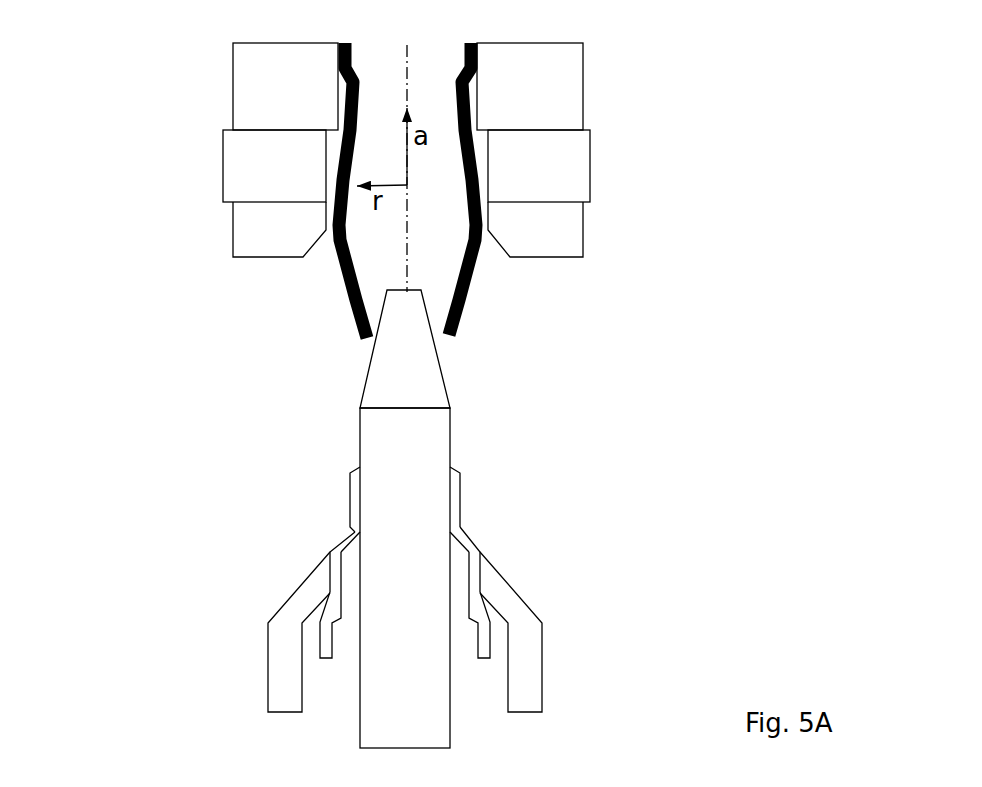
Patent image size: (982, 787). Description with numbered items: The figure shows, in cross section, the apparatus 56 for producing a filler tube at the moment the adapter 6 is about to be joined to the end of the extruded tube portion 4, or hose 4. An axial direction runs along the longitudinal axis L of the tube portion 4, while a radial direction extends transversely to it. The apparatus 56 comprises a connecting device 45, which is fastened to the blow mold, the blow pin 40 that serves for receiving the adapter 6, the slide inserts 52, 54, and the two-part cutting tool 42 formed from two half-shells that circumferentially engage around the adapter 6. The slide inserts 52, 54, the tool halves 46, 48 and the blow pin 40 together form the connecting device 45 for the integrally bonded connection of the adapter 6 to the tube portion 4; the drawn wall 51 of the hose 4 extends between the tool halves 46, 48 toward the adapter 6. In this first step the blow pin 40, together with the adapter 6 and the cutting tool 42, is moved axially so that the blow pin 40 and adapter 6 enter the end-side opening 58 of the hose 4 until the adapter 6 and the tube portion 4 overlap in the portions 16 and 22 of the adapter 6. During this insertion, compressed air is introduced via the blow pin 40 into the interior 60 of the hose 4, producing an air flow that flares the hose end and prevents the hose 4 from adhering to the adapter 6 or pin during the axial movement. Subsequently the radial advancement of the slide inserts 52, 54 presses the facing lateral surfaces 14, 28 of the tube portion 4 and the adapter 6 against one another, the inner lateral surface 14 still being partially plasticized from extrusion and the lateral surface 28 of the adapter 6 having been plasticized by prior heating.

The tube portion 4 is at (463, 303).
The adapter 6 is at (458, 505).
The inner lateral surface 14 is at (374, 318).
The portion of the adapter 16 is at (350, 508).
The portion of the adapter 22 is at (343, 535).
The lateral surface 28 is at (347, 497).
The blow pin 40 is at (437, 423).
The cutting tool 42 is at (527, 640).
The connecting device 45 is at (180, 108).
The tool half 46 is at (252, 95).
The tool half 48 is at (563, 88).
The first beam 51 is at (327, 247).
The slide insert 52 is at (253, 192).
The slide insert 54 is at (563, 192).
The apparatus 56 is at (172, 322).
The end-side opening 58 is at (440, 340).
The interior 60 is at (450, 244).
The longitudinal axis L is at (410, 63).